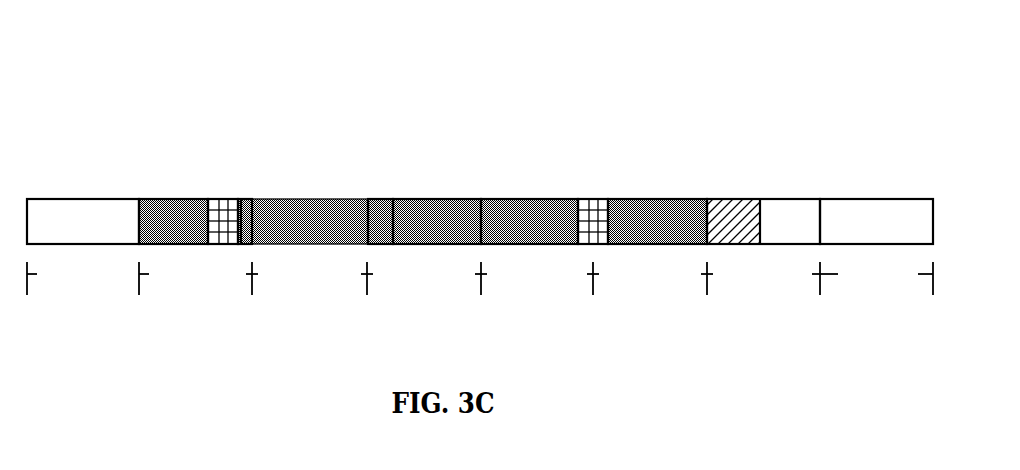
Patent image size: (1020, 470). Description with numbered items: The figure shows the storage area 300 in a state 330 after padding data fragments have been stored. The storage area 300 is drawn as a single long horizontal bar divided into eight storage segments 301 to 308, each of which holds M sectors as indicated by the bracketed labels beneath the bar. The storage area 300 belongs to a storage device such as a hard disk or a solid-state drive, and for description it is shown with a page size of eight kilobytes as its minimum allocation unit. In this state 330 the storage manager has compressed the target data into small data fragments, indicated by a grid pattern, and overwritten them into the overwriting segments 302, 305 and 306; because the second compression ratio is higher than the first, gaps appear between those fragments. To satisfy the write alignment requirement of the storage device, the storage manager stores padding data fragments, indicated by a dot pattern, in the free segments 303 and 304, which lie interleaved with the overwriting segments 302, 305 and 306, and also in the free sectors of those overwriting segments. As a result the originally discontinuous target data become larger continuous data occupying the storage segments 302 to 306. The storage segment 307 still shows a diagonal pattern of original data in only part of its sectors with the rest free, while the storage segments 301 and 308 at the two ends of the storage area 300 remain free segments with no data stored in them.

The storage area 300 is at (163, 78).
The storage segment 301 is at (105, 199).
The storage segment 302 is at (223, 199).
The storage segment 303 is at (337, 199).
The storage segment 304 is at (452, 199).
The storage segment 305 is at (570, 199).
The storage segment 306 is at (692, 199).
The storage segment 307 is at (797, 199).
The storage segment 308 is at (913, 199).
The state 330 is at (683, 98).